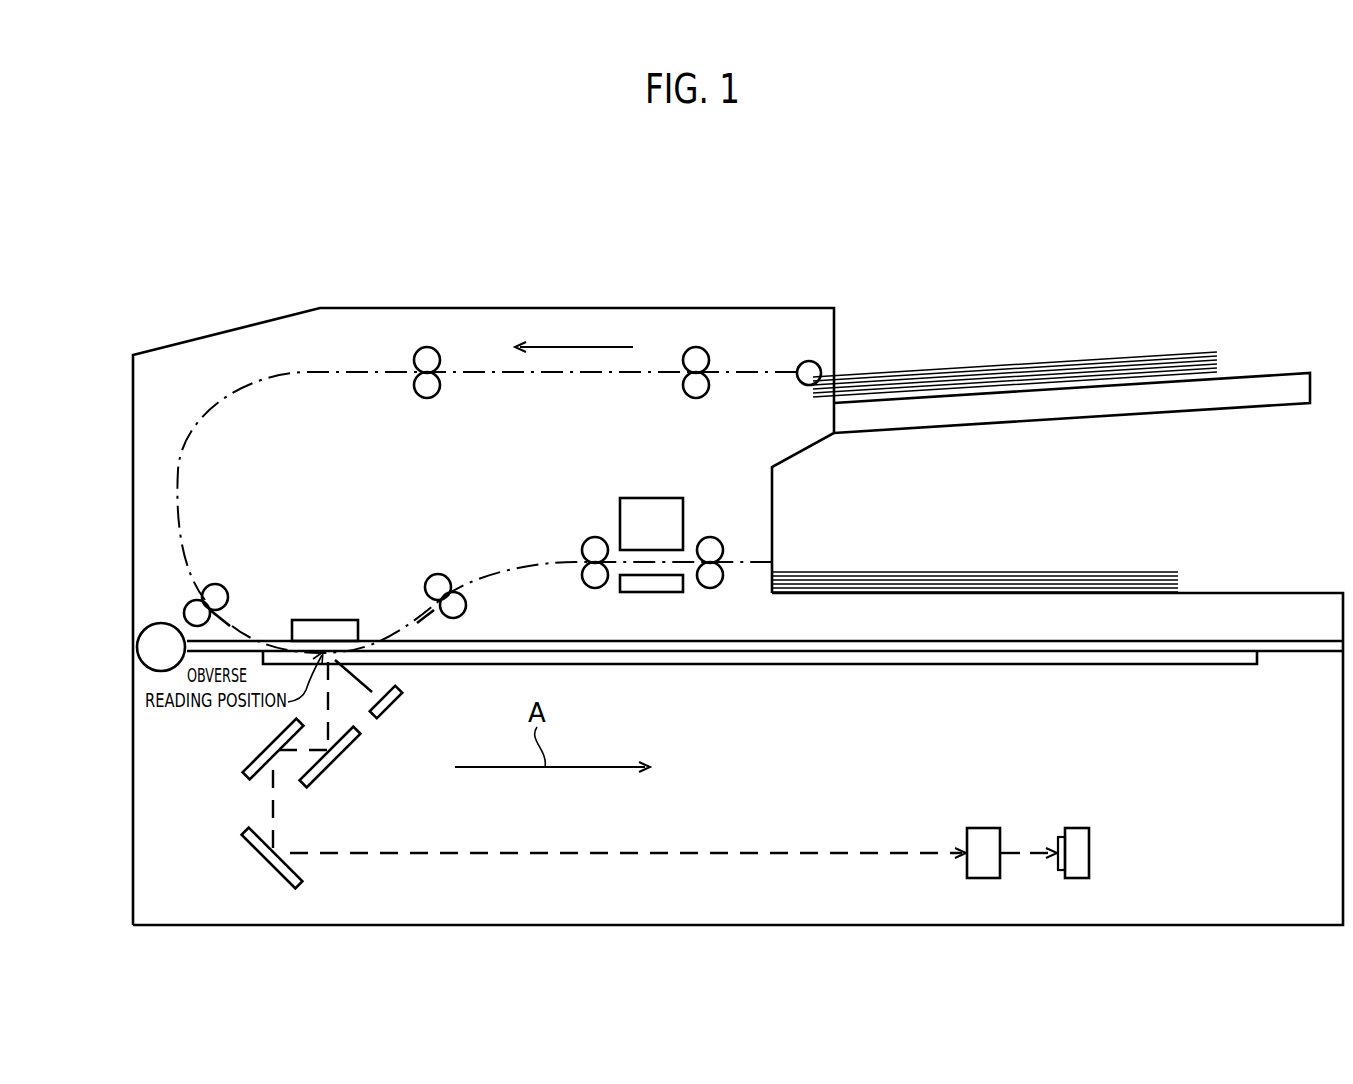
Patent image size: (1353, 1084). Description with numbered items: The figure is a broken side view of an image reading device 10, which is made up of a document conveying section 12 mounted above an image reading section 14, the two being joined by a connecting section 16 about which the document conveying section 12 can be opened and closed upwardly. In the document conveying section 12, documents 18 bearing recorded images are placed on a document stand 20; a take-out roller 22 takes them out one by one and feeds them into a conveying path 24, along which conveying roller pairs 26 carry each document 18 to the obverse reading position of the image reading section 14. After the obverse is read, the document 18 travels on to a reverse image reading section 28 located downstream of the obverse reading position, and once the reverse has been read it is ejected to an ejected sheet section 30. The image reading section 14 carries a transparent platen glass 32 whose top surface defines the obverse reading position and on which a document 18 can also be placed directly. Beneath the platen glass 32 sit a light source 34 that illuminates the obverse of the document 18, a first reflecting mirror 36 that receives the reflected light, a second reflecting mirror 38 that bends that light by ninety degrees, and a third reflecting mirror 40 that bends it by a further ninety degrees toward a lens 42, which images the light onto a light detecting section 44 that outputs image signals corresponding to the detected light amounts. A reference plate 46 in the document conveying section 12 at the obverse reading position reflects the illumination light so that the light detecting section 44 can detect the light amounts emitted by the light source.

The image reading device 10 is at (773, 261).
The document conveying section 12 is at (452, 308).
The image reading section 14 is at (133, 729).
The connecting section 16 is at (155, 637).
The documents 18 is at (1012, 365).
The document stand 20 is at (1258, 373).
The take-out roller 22 is at (797, 366).
The conveying path 24 is at (612, 379).
The conveying roller pairs 26 is at (445, 383).
The reverse image reading section 28 is at (652, 488).
The ejected sheet section 30 is at (1245, 593).
The platen glass 32 is at (878, 664).
The light source 34 is at (398, 705).
The first reflecting mirror 36 is at (343, 767).
The second reflecting mirror 38 is at (252, 740).
The third reflecting mirror 40 is at (262, 868).
The lens 42 is at (985, 828).
The light detecting section 44 is at (1077, 828).
The reference plate 46 is at (325, 615).